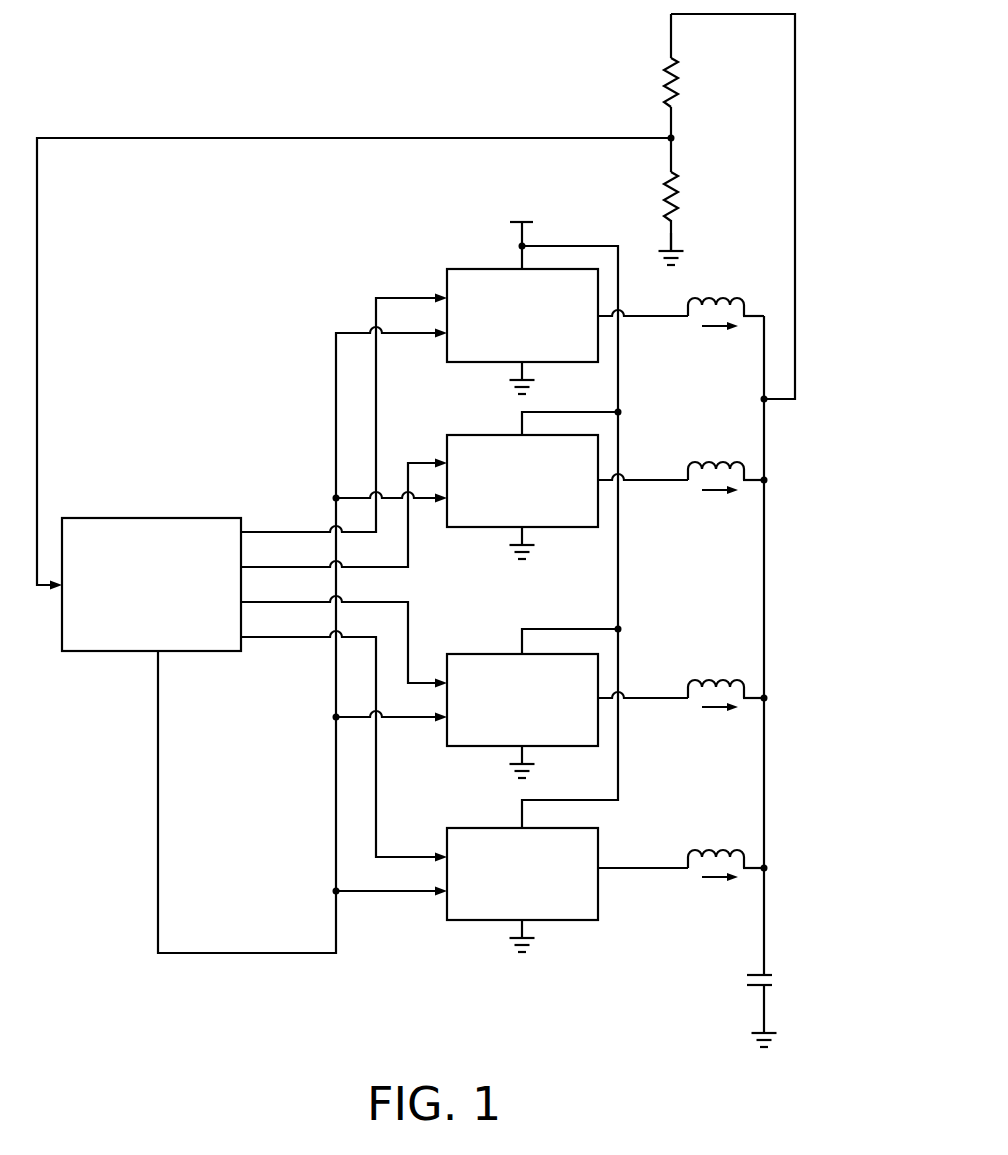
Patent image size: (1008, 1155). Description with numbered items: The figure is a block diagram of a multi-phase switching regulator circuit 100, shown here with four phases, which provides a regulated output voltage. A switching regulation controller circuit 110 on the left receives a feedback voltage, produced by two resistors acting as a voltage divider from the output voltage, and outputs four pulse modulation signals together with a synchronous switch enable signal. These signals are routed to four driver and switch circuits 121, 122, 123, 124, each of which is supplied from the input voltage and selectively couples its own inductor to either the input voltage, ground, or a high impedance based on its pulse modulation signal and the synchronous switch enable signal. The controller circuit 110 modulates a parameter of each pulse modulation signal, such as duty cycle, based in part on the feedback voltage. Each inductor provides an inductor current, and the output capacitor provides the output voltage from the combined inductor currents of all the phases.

The multi-phase switching regulator circuit 100 is at (377, 72).
The switching regulation controller circuit 110 is at (137, 634).
The driver and switch circuit 121 is at (508, 353).
The driver and switch circuit 122 is at (508, 518).
The driver and switch circuit 123 is at (508, 737).
The driver and switch circuit 124 is at (508, 911).